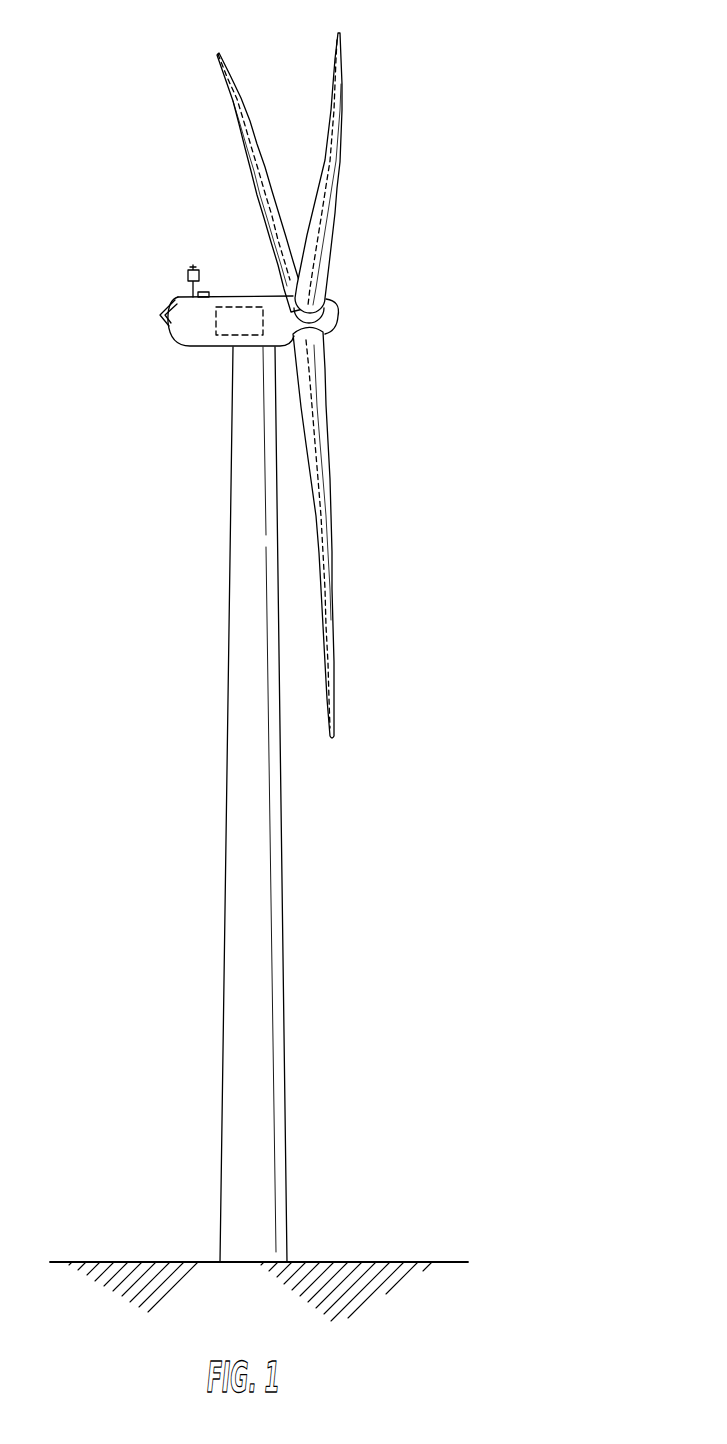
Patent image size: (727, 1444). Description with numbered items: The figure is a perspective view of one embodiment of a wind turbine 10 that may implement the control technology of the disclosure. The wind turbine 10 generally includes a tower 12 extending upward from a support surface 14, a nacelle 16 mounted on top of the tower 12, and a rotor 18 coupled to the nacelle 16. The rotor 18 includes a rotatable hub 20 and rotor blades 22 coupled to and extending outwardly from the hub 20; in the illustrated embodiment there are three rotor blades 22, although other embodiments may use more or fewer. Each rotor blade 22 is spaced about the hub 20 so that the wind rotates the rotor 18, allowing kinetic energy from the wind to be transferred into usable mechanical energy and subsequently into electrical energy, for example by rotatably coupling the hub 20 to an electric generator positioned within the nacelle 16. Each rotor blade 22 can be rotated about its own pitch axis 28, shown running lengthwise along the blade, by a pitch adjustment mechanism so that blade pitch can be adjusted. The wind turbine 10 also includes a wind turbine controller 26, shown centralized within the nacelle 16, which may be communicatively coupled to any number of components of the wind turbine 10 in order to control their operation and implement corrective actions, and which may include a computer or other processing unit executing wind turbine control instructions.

The wind turbine 10 is at (440, 122).
The tower 12 is at (238, 928).
The support surface 14 is at (137, 1262).
The nacelle 16 is at (208, 348).
The rotor 18 is at (342, 297).
The rotatable hub 20 is at (336, 322).
The rotor blades 22 is at (322, 155).
The wind turbine controller 26 is at (242, 307).
The pitch axis 28 is at (255, 172).